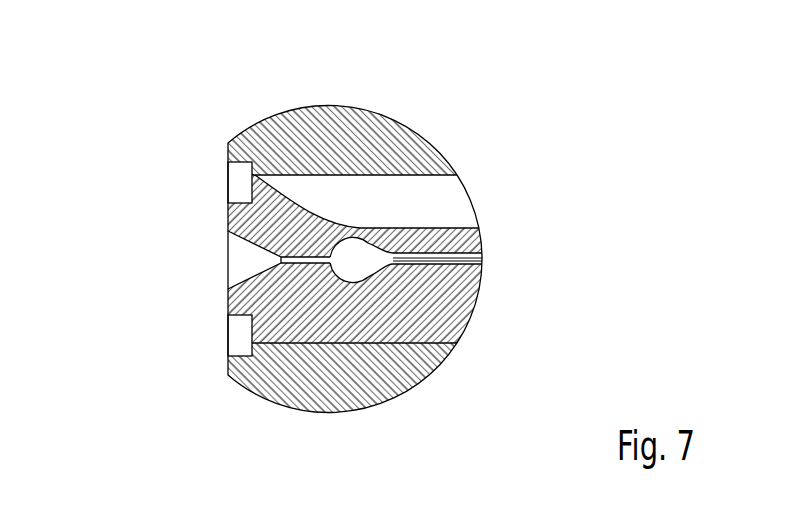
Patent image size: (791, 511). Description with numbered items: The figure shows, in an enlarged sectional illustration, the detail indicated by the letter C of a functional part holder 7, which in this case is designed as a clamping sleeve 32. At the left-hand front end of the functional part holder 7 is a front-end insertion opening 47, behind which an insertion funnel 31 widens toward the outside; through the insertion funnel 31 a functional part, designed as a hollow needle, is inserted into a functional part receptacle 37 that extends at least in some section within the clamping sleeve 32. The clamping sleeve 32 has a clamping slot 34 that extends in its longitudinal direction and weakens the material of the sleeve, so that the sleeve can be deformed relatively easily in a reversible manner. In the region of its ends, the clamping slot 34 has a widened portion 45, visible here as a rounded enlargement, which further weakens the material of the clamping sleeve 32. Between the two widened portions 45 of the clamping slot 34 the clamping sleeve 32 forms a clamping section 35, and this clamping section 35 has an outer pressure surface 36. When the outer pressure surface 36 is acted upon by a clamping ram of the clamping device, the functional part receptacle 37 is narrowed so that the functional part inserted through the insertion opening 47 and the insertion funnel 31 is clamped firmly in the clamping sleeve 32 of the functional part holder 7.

The functional part holder 7 is at (425, 307).
The detail C is at (252, 124).
The insertion funnel 31 is at (232, 281).
The clamping sleeve 32 is at (287, 328).
The clamping slot 34 is at (452, 258).
The clamping section 35 is at (468, 242).
The outer pressure surface 36 is at (440, 227).
The functional part receptacle 37 is at (296, 257).
The widened portion 45 is at (357, 258).
The front-end insertion opening 47 is at (228, 264).